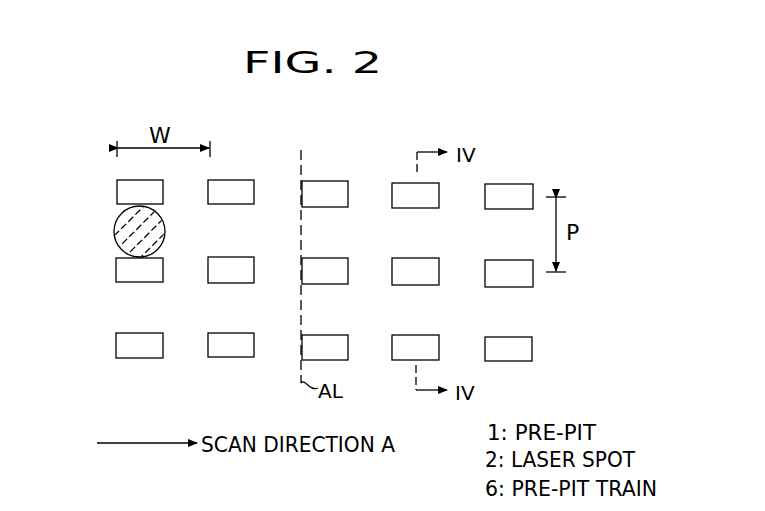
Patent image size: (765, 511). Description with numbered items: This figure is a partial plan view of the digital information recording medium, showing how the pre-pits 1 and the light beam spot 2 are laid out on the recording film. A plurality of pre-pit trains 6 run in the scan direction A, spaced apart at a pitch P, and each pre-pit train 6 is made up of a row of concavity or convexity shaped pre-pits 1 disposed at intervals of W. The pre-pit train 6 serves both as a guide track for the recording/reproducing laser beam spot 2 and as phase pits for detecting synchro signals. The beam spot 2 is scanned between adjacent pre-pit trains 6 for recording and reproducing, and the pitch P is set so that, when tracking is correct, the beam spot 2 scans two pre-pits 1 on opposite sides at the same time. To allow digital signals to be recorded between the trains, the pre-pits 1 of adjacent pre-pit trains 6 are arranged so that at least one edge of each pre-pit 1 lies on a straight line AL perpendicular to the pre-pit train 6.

The pre-pit 1 is at (122, 196).
The light beam spot 2 is at (115, 232).
The pre-pit train 6 is at (523, 184).